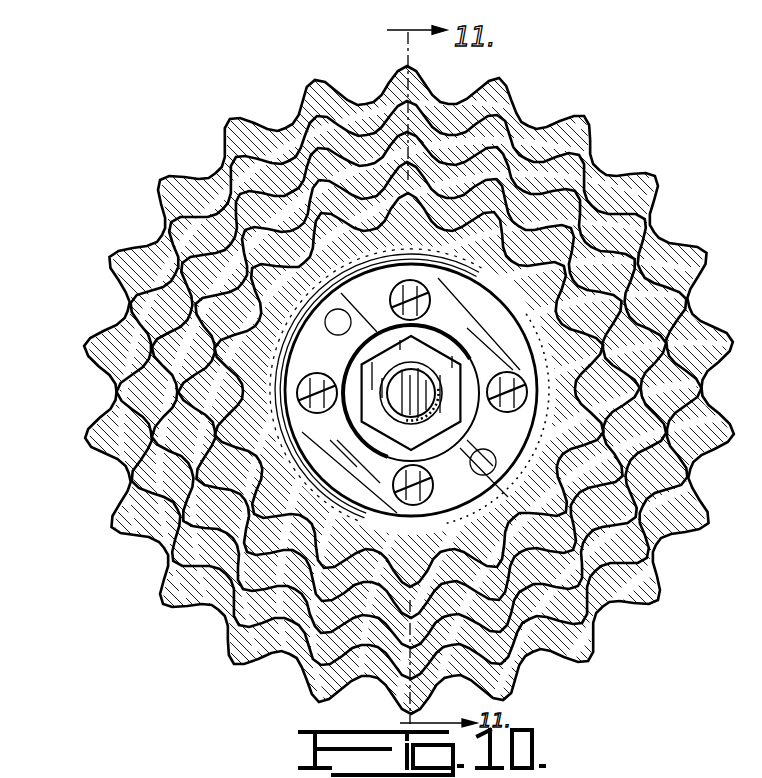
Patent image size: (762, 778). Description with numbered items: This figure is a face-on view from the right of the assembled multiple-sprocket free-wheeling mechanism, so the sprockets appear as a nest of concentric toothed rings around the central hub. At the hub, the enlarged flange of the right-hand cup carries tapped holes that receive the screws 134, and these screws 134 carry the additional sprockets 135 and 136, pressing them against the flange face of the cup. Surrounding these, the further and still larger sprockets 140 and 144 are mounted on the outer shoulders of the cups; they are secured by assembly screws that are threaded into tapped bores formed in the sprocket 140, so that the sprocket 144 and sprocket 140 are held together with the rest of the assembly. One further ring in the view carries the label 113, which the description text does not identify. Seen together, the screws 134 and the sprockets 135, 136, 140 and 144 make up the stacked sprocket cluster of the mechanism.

The sprocket 144 is at (97, 462).
The sprocket 140 is at (145, 525).
The third sprocket 113 is at (151, 402).
The additional sprocket 135 is at (208, 314).
The additional sprocket 136 is at (254, 275).
The screws 134 is at (330, 358).